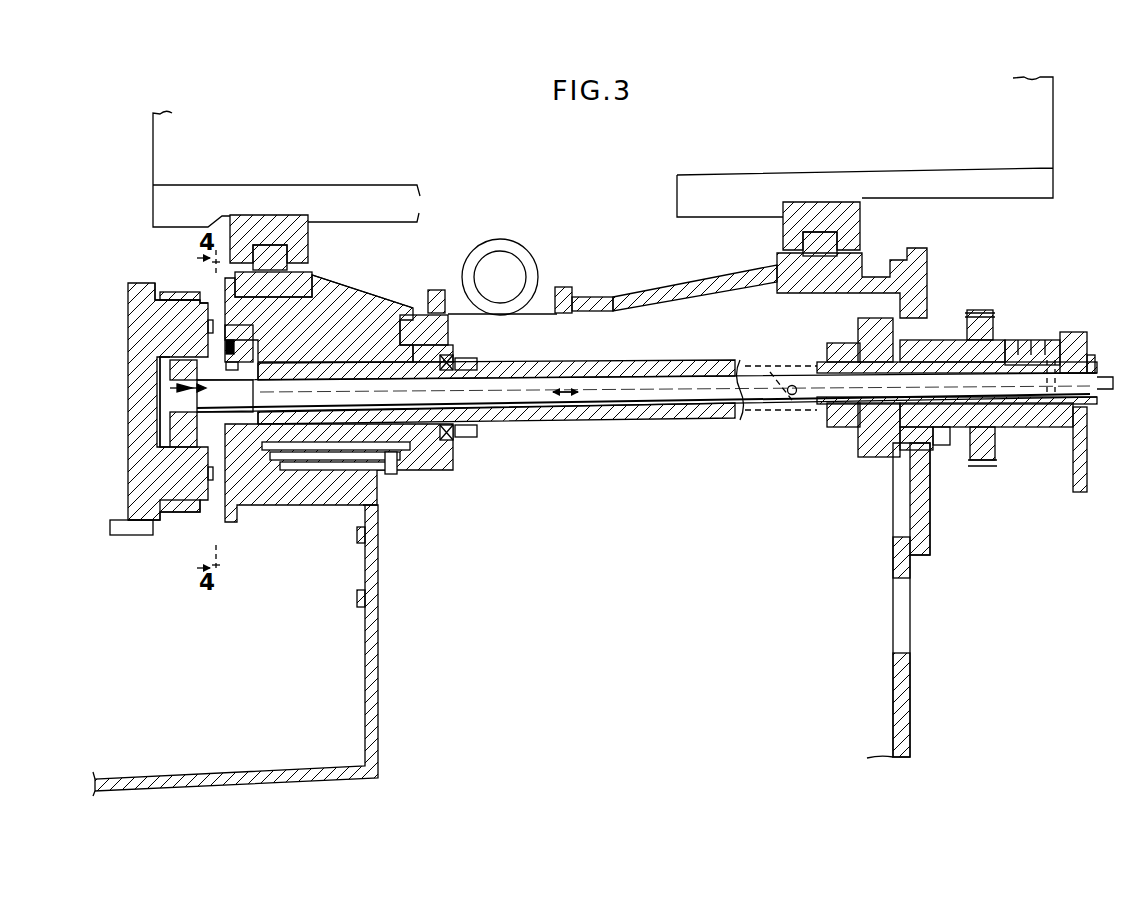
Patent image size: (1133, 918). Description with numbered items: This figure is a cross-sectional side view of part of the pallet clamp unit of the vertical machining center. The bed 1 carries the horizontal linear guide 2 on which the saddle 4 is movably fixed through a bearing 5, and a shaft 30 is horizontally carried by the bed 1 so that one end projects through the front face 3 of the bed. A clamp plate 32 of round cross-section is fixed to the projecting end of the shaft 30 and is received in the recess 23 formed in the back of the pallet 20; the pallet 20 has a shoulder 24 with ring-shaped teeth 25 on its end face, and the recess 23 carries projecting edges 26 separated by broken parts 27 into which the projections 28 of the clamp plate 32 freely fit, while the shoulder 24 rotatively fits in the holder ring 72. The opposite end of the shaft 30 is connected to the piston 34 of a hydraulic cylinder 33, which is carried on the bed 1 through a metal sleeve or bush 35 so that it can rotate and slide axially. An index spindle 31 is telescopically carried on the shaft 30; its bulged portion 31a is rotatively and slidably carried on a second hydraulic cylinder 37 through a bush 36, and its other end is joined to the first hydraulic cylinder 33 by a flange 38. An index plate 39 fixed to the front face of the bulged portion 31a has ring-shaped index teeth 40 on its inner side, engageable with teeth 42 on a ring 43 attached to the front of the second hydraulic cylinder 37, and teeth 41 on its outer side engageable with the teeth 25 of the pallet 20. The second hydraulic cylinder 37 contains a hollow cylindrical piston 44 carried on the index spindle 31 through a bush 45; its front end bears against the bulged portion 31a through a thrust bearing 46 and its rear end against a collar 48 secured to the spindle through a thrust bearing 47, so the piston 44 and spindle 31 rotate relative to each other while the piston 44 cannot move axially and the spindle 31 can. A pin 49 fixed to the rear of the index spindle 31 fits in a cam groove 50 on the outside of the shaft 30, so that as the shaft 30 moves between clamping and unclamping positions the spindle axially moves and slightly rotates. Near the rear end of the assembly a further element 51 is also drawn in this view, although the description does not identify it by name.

The bed 1 is at (636, 296).
The linear guide 2 is at (287, 258).
The front face 3 is at (366, 660).
The saddle 4 is at (392, 185).
The bearing 5 is at (292, 215).
The pallet 20 is at (135, 367).
The recess 23 is at (168, 422).
The shoulder 24 is at (165, 300).
The ring-shaped teeth 25 is at (200, 297).
The projecting edges 26 is at (162, 440).
The broken parts 27 is at (175, 350).
The projections 28 is at (165, 465).
The shaft 30 is at (607, 413).
The index spindle 31 is at (682, 418).
The bulged portion 31a is at (370, 500).
The clamp plate 32 is at (172, 395).
The hydraulic cylinder 33 is at (880, 445).
The piston 34 is at (982, 465).
The metal sleeve or bush 35 is at (941, 450).
The metal sleeve or bush 36 is at (350, 320).
The second hydraulic cylinder 37 is at (436, 300).
The flange 38 is at (858, 333).
The index plate 39 is at (262, 470).
The index teeth 40 is at (300, 475).
The teeth 41 is at (235, 538).
The teeth 42 is at (300, 285).
The ring 43 is at (300, 322).
The hollow cylindrical piston 44 is at (445, 330).
The metal sleeve or bush 45 is at (445, 460).
The thrust bearing 46 is at (350, 432).
The thrust bearing 47 is at (452, 440).
The collar 48 is at (470, 432).
The pin 49 is at (793, 396).
The cam groove 50 is at (770, 410).
The grease fitting 51 is at (985, 312).
The holder ring 72 is at (150, 530).